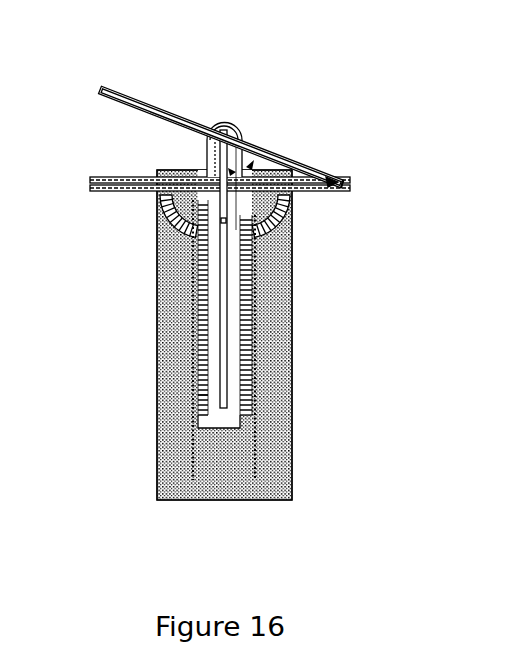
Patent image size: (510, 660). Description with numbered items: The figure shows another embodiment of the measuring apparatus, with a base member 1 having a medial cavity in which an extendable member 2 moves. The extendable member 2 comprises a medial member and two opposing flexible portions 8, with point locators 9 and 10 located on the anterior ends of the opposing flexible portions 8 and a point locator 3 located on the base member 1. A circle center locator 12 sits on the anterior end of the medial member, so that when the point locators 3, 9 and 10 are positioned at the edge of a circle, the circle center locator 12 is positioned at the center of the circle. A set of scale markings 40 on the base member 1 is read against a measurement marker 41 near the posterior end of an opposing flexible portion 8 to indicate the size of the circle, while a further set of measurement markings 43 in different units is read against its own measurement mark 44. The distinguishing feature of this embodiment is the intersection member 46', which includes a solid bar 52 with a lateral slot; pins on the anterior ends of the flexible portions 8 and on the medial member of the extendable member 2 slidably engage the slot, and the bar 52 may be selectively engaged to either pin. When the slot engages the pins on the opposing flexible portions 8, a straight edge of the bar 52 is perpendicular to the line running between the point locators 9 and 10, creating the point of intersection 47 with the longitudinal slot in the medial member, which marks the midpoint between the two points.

The base member 1 is at (297, 370).
The extendable member 2 is at (245, 423).
The point locator 3 is at (245, 227).
The opposing flexible portions 8 is at (176, 208).
The point locator 9 is at (344, 190).
The point locator 10 is at (150, 187).
The circle center locator 12 is at (244, 126).
The set of scale markings 40 is at (180, 360).
The measurement marker 41 is at (192, 398).
The set of measurement markings 43 is at (262, 398).
The measurement mark 44 is at (205, 251).
The intersection member 46' is at (145, 129).
The point of intersection 47 is at (220, 160).
The solid bar 52 is at (142, 92).